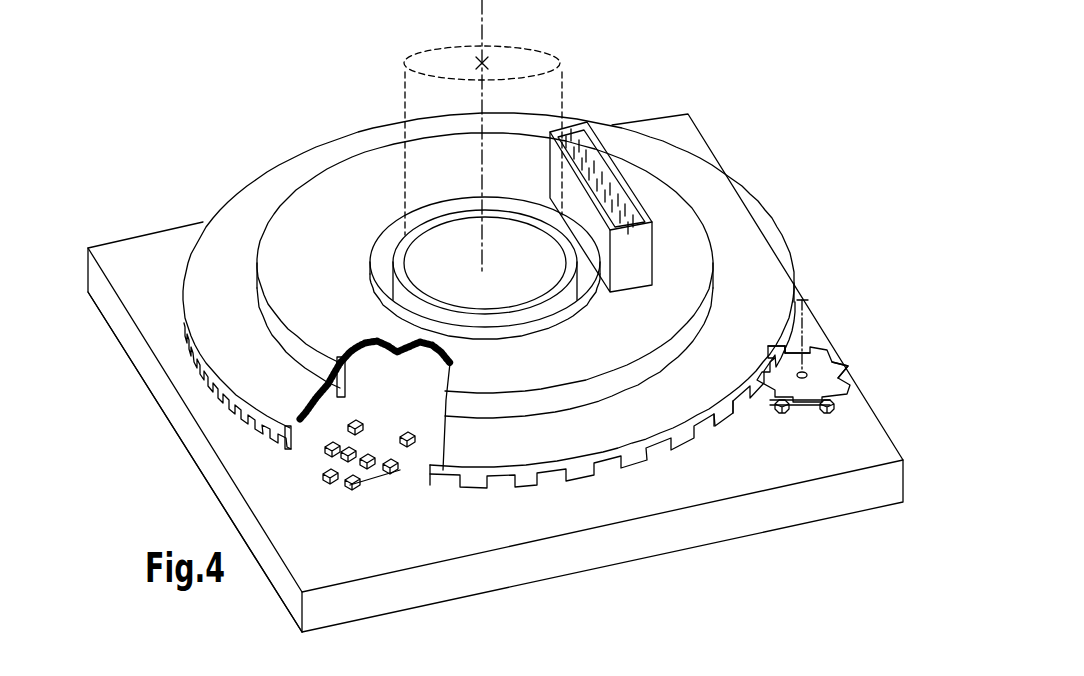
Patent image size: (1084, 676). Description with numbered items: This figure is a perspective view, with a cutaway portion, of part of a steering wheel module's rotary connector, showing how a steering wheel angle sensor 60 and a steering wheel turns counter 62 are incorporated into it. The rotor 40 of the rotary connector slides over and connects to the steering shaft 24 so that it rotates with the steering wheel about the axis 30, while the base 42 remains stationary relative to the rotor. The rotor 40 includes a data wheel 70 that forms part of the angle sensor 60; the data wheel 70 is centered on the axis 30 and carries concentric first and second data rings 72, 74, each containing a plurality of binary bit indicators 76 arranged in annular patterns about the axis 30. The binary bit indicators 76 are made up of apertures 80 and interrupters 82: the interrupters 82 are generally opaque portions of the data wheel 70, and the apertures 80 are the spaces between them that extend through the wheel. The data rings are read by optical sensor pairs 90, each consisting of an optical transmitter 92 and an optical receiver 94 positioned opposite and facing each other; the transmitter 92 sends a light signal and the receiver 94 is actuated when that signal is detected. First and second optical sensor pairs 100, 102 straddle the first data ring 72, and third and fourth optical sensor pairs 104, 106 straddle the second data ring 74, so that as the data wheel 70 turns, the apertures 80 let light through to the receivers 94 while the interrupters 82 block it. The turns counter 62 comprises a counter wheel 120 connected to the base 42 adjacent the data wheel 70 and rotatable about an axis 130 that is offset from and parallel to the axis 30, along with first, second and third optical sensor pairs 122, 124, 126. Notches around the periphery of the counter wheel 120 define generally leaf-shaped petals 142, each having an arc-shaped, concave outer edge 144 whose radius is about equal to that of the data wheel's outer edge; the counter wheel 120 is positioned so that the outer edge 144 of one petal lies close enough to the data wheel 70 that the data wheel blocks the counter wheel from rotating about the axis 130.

The steering shaft 24 is at (563, 90).
The axis 30 is at (482, 8).
The rotor 40 is at (489, 361).
The base 42 is at (665, 492).
The steering wheel angle sensor 60 is at (212, 497).
The steering wheel turns counter 62 is at (873, 274).
The data wheel 70 is at (738, 242).
The first data ring 72 is at (286, 447).
The second data ring 74 is at (300, 388).
The binary bit indicators 76 is at (703, 420).
The apertures 80 is at (560, 488).
The interrupters 82 is at (636, 462).
The optical sensor pairs 90 is at (851, 386).
The optical transmitter 92 is at (330, 456).
The optical receiver 94 is at (392, 458).
The first optical sensor pair 100 is at (331, 482).
The second optical sensor pair 102 is at (368, 470).
The third optical sensor pair 104 is at (356, 424).
The fourth optical sensor pair 106 is at (409, 436).
The counter wheel 120 is at (836, 346).
The first optical sensor pair of the turns counter 122 is at (784, 414).
The second optical sensor pair of the turns counter 124 is at (840, 401).
The third optical sensor pair of the turns counter 126 is at (851, 368).
The axis 130 is at (814, 312).
The petals 142 is at (770, 346).
The outer edge 144 is at (799, 298).